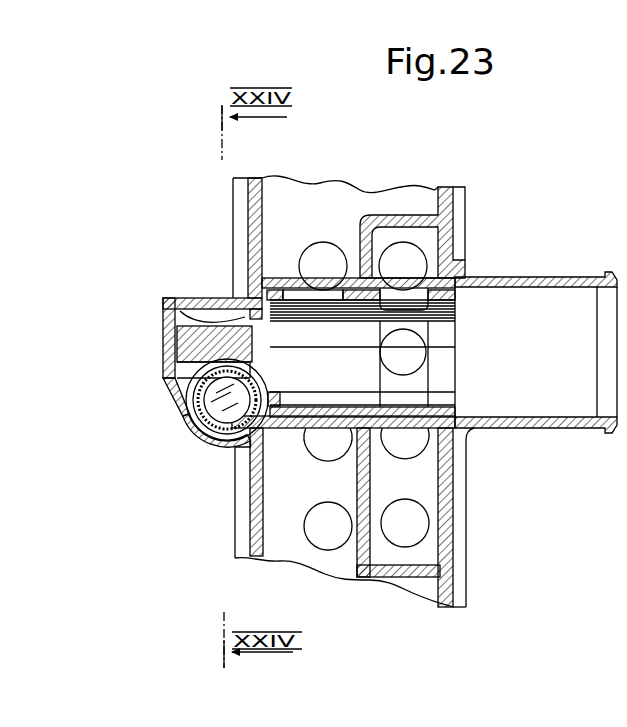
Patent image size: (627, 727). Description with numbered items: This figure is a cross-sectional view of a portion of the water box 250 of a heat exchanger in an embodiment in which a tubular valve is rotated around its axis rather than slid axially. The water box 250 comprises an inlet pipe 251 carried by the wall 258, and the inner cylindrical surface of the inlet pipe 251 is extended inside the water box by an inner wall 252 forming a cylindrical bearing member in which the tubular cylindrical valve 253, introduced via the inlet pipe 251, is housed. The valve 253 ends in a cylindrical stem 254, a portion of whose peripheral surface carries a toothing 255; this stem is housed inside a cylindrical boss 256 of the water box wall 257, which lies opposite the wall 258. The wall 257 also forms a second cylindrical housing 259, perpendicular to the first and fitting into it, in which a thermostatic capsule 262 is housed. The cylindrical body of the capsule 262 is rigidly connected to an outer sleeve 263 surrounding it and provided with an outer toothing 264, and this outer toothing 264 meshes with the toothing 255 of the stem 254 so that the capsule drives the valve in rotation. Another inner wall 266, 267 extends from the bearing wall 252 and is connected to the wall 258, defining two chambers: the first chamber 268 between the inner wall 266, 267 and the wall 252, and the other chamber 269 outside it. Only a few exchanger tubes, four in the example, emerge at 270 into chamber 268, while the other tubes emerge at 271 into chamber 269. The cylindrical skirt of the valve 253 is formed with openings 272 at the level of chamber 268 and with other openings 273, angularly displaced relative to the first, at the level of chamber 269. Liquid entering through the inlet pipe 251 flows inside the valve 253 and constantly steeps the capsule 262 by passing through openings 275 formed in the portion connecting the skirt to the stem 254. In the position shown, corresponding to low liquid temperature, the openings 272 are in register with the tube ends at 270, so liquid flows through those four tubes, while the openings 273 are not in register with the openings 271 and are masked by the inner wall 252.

The water box 250 is at (227, 214).
The inlet pipe 251 is at (537, 277).
The inner wall 252 is at (287, 284).
The tubular cylindrical valve 253 is at (463, 345).
The cylindrical stem 254 is at (212, 328).
The toothing 255 is at (193, 372).
The cylindrical boss 256 is at (163, 316).
The water box wall 257 is at (242, 537).
The wall 258 is at (455, 522).
The cylindrical housing 259 is at (197, 443).
The capsule 262 is at (190, 406).
The outer sleeve 263 is at (190, 427).
The outer toothing 264 is at (217, 449).
The inner wall 266 is at (358, 479).
The inner wall 267 is at (383, 213).
The chamber 268 is at (427, 471).
The chamber 269 is at (262, 503).
The tube ends 270 is at (455, 548).
The tube openings 271 is at (318, 541).
The openings 272 is at (430, 378).
The openings 273 is at (324, 293).
The openings 275 is at (232, 298).